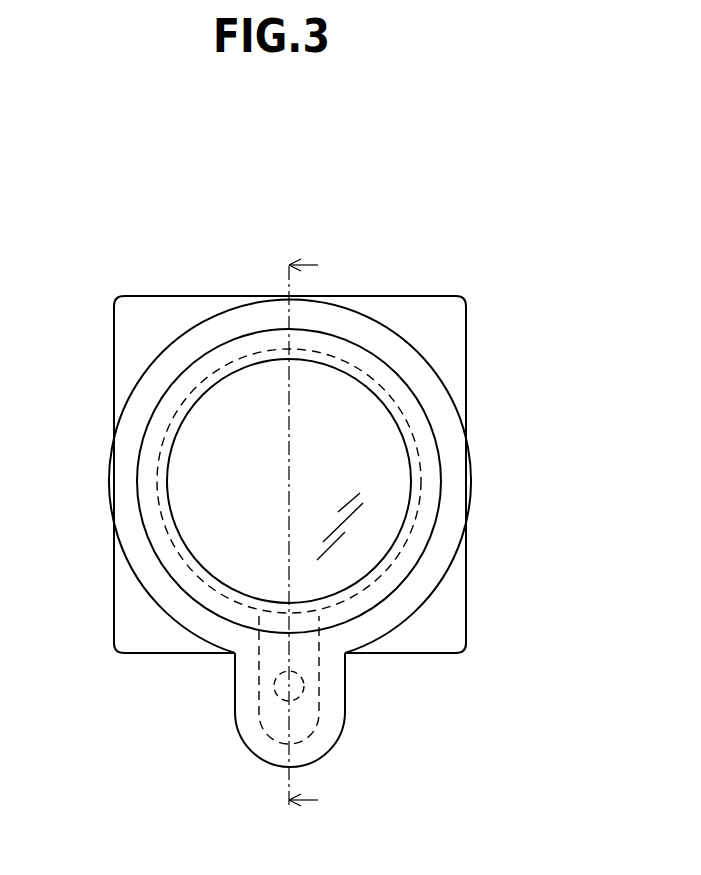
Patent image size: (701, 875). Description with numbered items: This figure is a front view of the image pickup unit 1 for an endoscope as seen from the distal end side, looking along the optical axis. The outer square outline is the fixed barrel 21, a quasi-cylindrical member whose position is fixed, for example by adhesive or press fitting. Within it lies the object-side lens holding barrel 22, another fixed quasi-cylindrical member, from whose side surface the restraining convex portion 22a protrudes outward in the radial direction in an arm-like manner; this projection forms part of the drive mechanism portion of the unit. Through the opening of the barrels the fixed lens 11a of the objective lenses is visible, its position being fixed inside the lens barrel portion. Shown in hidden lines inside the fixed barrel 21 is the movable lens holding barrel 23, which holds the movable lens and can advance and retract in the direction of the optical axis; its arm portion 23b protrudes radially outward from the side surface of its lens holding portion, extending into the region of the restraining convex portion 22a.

The image pickup unit 1 is at (331, 240).
The fixed barrel 21 is at (143, 296).
The object-side lens holding barrel 22 is at (152, 597).
The restraining convex portion 22a is at (236, 735).
The movable lens holding barrel 23 is at (155, 481).
The arm portion 23b is at (322, 678).
The fixed lens 11a is at (385, 443).